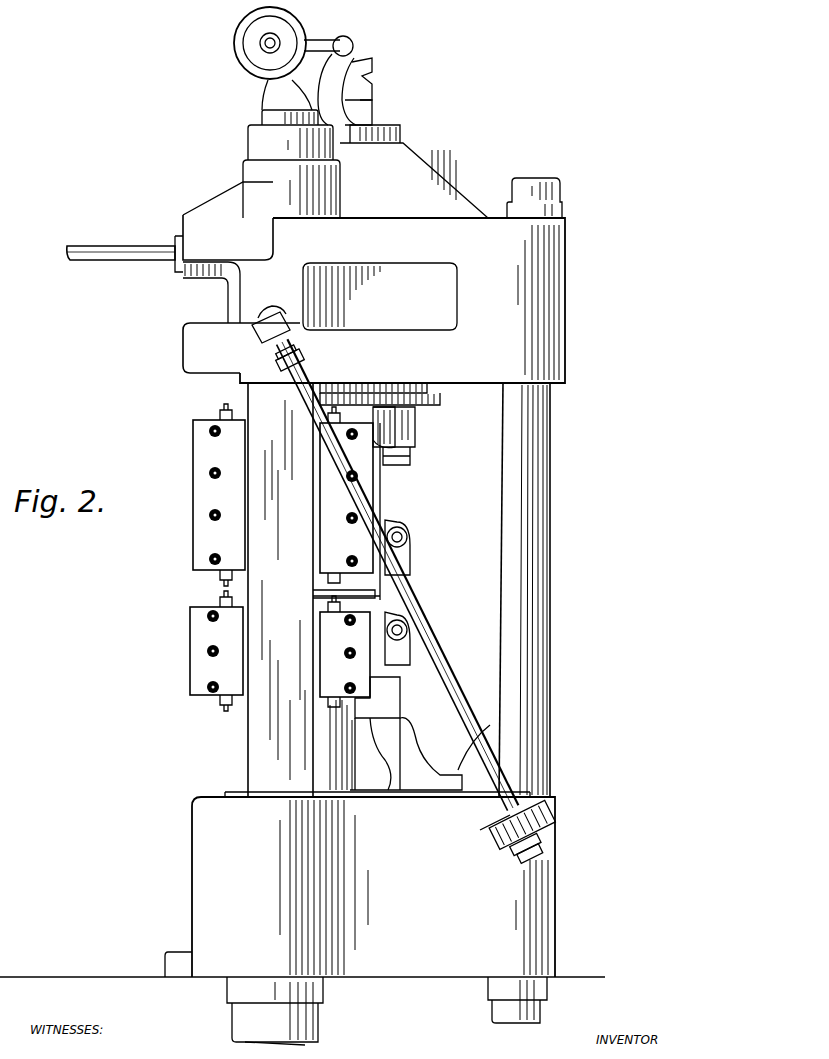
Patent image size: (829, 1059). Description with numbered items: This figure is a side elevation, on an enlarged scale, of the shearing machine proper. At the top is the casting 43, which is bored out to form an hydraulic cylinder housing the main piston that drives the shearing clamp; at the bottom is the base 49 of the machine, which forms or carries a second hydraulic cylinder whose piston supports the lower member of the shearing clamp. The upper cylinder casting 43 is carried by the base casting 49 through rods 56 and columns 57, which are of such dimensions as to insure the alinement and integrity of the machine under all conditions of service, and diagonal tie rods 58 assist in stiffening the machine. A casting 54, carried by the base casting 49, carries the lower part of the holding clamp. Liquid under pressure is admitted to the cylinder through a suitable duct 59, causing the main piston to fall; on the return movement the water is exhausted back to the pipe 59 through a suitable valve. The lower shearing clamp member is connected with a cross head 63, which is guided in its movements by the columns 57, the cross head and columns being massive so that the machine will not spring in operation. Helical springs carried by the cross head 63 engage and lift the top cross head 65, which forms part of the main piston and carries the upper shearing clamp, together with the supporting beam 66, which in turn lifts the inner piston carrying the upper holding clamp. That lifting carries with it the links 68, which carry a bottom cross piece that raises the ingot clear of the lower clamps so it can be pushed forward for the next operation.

The casting 43 is at (374, 206).
The base 49 is at (360, 918).
The casting 54 is at (398, 706).
The rods 56 is at (538, 533).
The columns 57 is at (280, 590).
The diagonal tie rods 58 is at (453, 630).
The duct 59 is at (121, 262).
The cross head 63 is at (200, 645).
The top cross head 65 is at (203, 452).
The supporting beam 66 is at (415, 427).
The links 68 is at (408, 562).